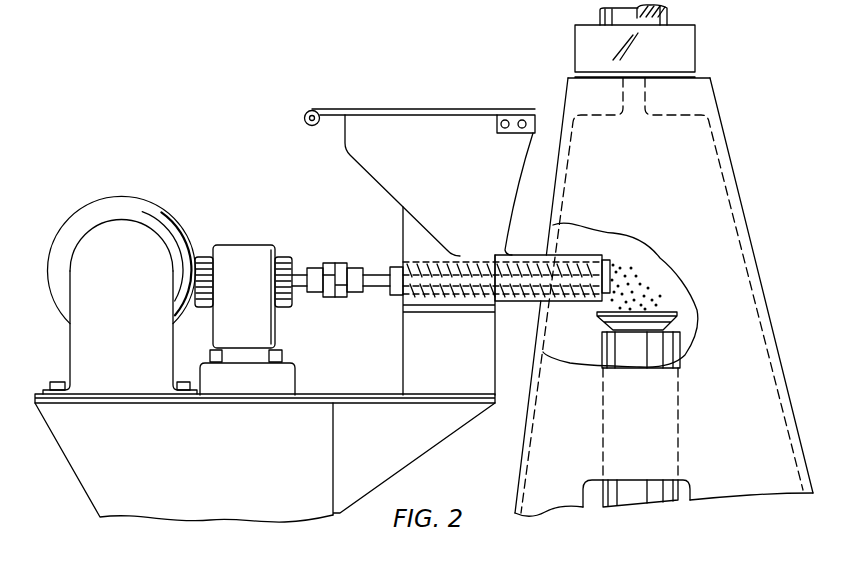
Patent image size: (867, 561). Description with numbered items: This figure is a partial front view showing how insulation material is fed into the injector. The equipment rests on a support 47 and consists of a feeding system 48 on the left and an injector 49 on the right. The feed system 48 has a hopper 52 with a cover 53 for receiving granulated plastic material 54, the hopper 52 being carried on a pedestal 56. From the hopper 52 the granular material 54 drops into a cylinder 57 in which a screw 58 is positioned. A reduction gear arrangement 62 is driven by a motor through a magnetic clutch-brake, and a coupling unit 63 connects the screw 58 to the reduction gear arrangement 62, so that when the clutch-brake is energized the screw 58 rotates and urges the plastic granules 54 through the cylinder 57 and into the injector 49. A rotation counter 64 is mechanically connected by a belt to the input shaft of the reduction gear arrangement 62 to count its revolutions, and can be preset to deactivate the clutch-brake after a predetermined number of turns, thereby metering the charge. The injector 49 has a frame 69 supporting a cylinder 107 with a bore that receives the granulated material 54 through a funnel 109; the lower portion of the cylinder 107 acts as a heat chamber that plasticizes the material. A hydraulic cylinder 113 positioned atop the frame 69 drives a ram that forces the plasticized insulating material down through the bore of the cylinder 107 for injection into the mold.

The support 47 is at (50, 400).
The feeding system 48 is at (245, 128).
The injector 49 is at (753, 181).
The hopper 52 is at (347, 147).
The cover 53 is at (408, 109).
The granulated plastic material 54 is at (648, 298).
The pedestal 56 is at (405, 339).
The cylinder 57 is at (540, 259).
The screw 58 is at (513, 301).
The reduction gear arrangement 62 is at (251, 246).
The coupling unit 63 is at (352, 297).
The rotation counter 64 is at (103, 199).
The frame 69 is at (750, 240).
The cylinder 107 is at (607, 344).
The funnel 109 is at (615, 324).
The hydraulic cylinder 113 is at (668, 15).